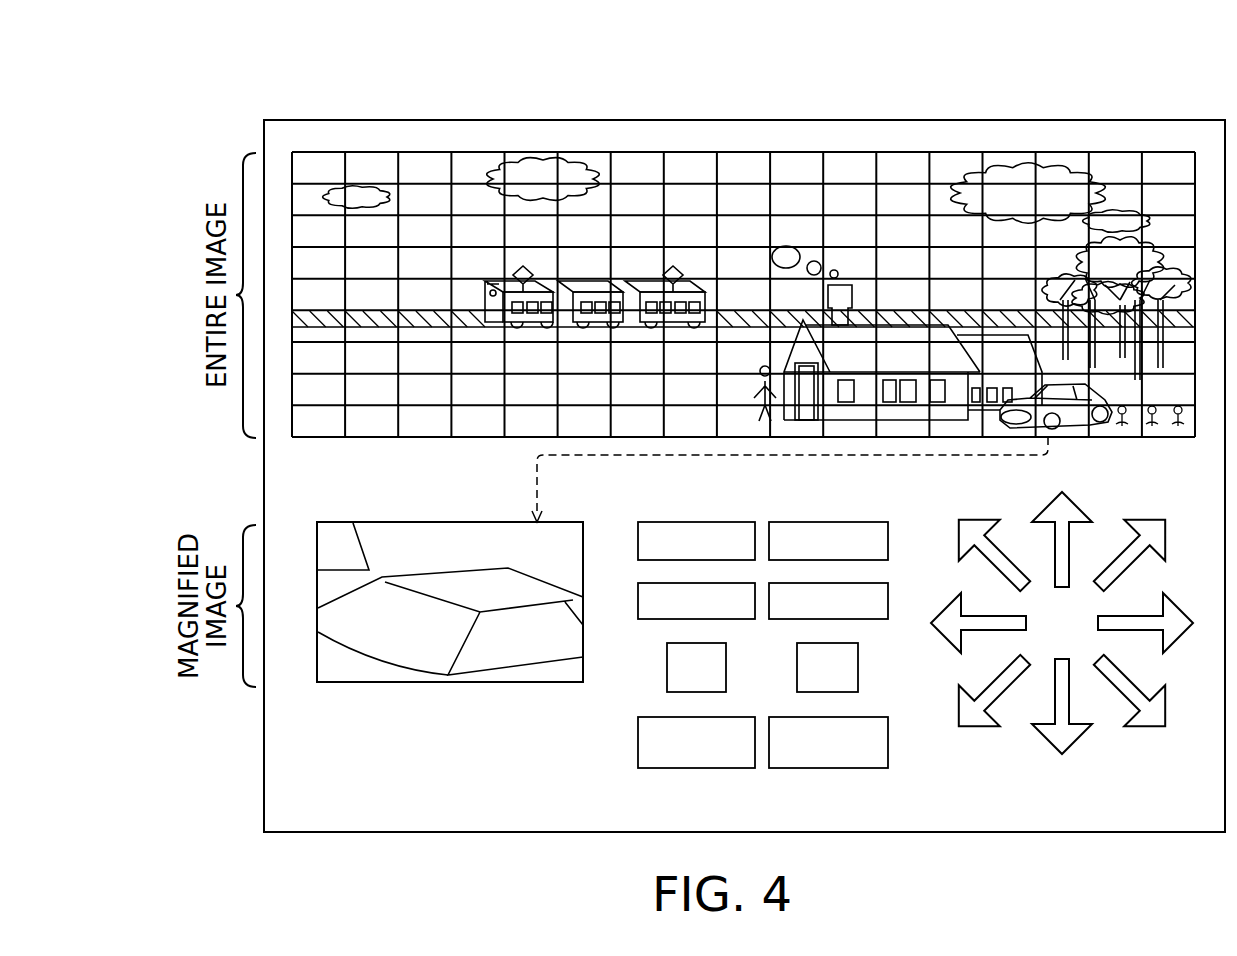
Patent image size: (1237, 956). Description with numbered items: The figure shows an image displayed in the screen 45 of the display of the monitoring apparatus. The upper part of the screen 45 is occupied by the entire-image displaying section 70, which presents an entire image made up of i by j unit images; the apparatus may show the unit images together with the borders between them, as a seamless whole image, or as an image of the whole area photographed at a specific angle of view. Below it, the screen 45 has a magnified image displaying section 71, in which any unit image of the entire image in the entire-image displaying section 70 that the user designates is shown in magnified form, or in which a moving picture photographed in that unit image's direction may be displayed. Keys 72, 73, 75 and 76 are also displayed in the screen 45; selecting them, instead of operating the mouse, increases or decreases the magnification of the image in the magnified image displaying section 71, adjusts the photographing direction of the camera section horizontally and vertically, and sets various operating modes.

The screen 45 is at (770, 108).
The entire-image displaying section 70 is at (478, 437).
The magnified image displaying section 71 is at (448, 682).
The key 72 is at (697, 768).
The key 73 is at (828, 768).
The key 75 is at (1192, 762).
The key 76 is at (890, 514).